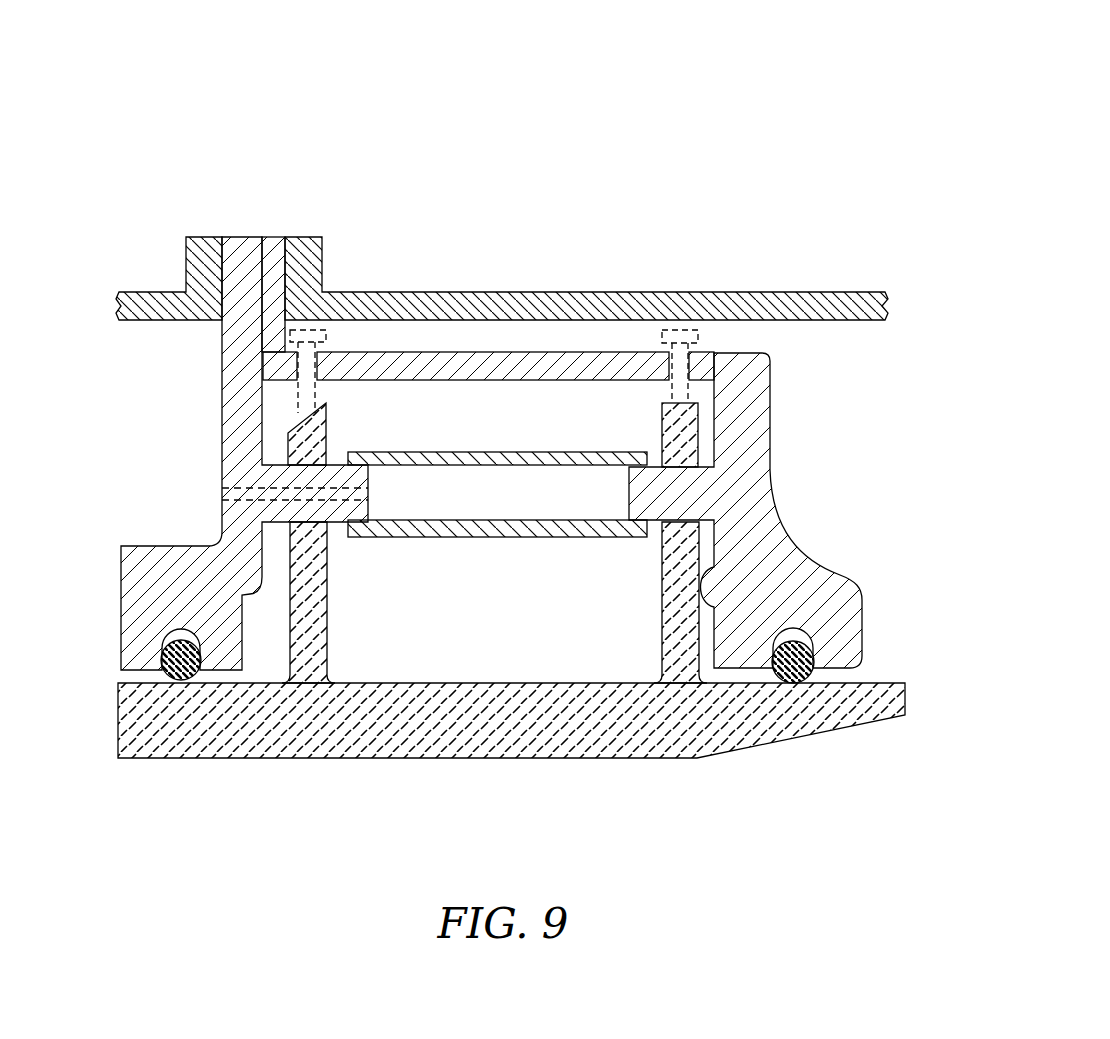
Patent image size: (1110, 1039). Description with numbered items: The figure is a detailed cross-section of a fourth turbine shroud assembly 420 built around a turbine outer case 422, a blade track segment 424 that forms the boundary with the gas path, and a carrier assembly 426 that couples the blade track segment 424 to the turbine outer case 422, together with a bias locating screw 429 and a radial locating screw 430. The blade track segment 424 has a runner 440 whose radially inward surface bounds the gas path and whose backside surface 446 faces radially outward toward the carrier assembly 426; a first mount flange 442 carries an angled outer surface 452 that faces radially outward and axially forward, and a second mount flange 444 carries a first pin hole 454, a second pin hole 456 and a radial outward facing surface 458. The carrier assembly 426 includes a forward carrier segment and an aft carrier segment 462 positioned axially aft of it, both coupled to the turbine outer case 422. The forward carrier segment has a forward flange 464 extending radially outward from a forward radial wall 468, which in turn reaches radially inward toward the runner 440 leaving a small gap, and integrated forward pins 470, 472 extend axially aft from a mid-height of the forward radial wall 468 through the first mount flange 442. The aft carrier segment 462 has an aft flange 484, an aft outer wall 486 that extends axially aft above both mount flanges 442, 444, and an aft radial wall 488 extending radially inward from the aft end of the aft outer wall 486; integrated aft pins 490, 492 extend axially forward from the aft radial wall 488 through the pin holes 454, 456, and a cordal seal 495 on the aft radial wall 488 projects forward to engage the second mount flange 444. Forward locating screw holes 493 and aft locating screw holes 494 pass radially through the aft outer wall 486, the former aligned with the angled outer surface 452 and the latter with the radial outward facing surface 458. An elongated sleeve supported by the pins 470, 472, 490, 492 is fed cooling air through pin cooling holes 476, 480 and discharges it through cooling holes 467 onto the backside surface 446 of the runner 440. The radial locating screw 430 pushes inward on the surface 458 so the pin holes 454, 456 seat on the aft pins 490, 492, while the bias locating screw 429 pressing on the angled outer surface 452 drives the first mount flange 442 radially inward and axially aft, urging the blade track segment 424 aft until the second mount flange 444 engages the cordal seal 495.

The turbine shroud assembly 420 is at (812, 146).
The turbine outer case 422 is at (362, 222).
The blade track segment 424 is at (713, 783).
The carrier assembly 426 is at (778, 410).
The bias locating screw 429 is at (318, 333).
The radial locating screw 430 is at (692, 332).
The runner 440 is at (773, 725).
The first mount flange 442 is at (313, 653).
The second mount flange 444 is at (677, 667).
The backside surface 446 is at (578, 684).
The angled outer surface 452 is at (300, 422).
The first pin hole 454 is at (686, 528).
The second pin hole 456 is at (811, 602).
The radial outward facing surface 458 is at (762, 353).
The aft carrier segment 462 is at (447, 538).
The forward flange 464 is at (234, 258).
The cooling holes 467 is at (521, 548).
The forward radial wall 468 is at (238, 409).
The first integrated forward pin 470 is at (313, 515).
The second integrated forward pin 472 is at (244, 453).
The pin cooling hole 476 is at (237, 493).
The pin cooling hole 480 is at (244, 478).
The aft flange 484 is at (273, 253).
The aft outer wall 486 is at (562, 366).
The aft radial wall 488 is at (730, 500).
The first integrated aft pin 490 is at (690, 490).
The second integrated aft pin 492 is at (777, 510).
The forward locating screw hole 493 is at (318, 367).
The aft locating screw hole 494 is at (692, 402).
The cordal seal 495 is at (703, 585).